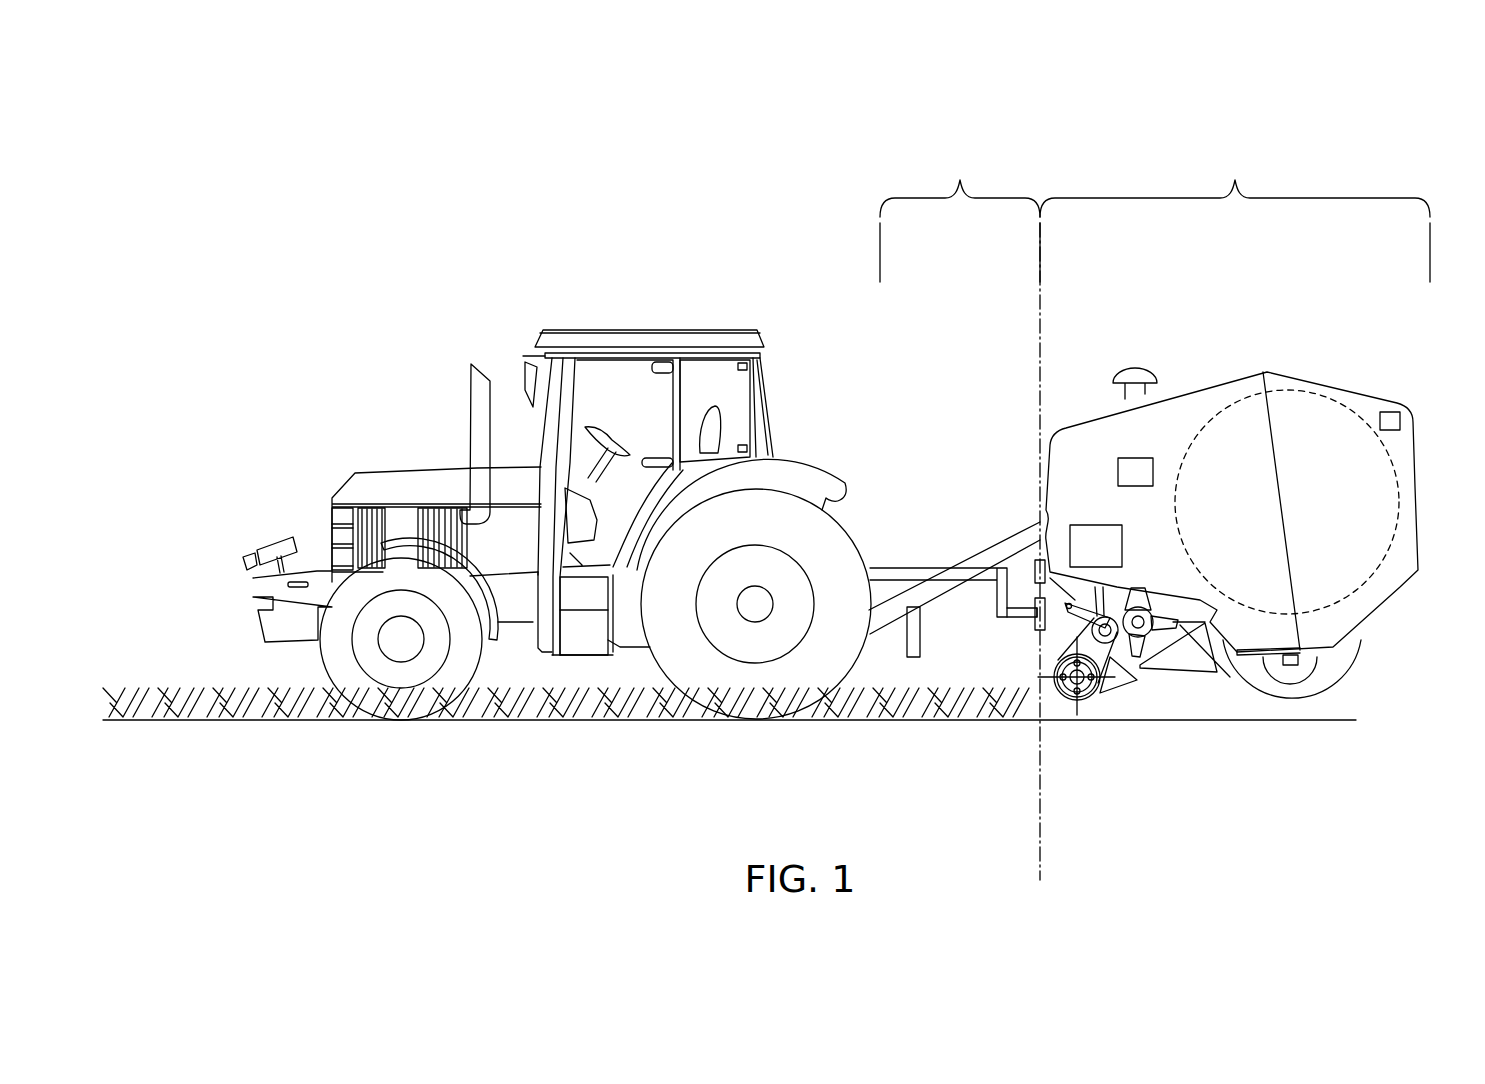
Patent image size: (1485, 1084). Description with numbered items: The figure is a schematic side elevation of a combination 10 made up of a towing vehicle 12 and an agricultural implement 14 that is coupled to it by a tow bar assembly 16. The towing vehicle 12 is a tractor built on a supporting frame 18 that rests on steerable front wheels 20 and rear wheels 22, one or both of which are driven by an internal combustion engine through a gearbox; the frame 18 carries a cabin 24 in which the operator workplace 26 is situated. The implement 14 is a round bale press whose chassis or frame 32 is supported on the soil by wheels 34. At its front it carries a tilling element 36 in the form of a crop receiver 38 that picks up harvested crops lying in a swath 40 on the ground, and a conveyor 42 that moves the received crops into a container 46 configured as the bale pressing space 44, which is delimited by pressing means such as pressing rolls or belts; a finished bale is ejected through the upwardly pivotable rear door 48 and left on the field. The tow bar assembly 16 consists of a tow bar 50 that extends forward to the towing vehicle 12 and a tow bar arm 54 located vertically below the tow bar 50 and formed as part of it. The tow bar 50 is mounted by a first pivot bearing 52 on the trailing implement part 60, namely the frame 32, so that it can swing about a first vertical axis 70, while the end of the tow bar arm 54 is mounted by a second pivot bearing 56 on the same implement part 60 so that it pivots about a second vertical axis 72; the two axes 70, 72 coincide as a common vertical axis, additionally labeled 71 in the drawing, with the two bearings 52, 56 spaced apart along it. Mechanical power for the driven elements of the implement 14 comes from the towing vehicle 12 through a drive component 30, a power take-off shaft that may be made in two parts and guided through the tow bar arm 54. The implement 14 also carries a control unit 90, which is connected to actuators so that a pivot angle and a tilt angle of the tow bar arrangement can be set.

The combination 10 is at (647, 130).
The towing vehicle 12 is at (568, 296).
The agricultural implement 14 is at (1003, 305).
The tow bar assembly 16 is at (960, 215).
The supporting frame 18 is at (519, 602).
The steerable front wheels 20 is at (400, 702).
The rear wheels 22 is at (757, 690).
The cabin 24 is at (572, 383).
The operator workplace 26 is at (656, 438).
The drive component 30 is at (890, 568).
The frame 32 is at (1290, 664).
The wheels 34 is at (1333, 697).
The tilling element 36 is at (1088, 720).
The crop receiver 38 is at (1077, 702).
The swath 40 is at (200, 703).
The conveyor 42 is at (1168, 688).
The bale pressing space 44 is at (1287, 465).
The container 46 is at (1317, 428).
The rear door 48 is at (1417, 470).
The tow bar 50 is at (988, 557).
The first pivot bearing 52 is at (1044, 540).
The tow bar arm 54 is at (1007, 616).
The second pivot bearing 56 is at (1038, 622).
The implement part 60 is at (1235, 215).
The first vertical axis 70 is at (1106, 566).
The reference plane 71 is at (1042, 853).
The second vertical axis 72 is at (1106, 566).
The control unit 90 is at (1110, 559).